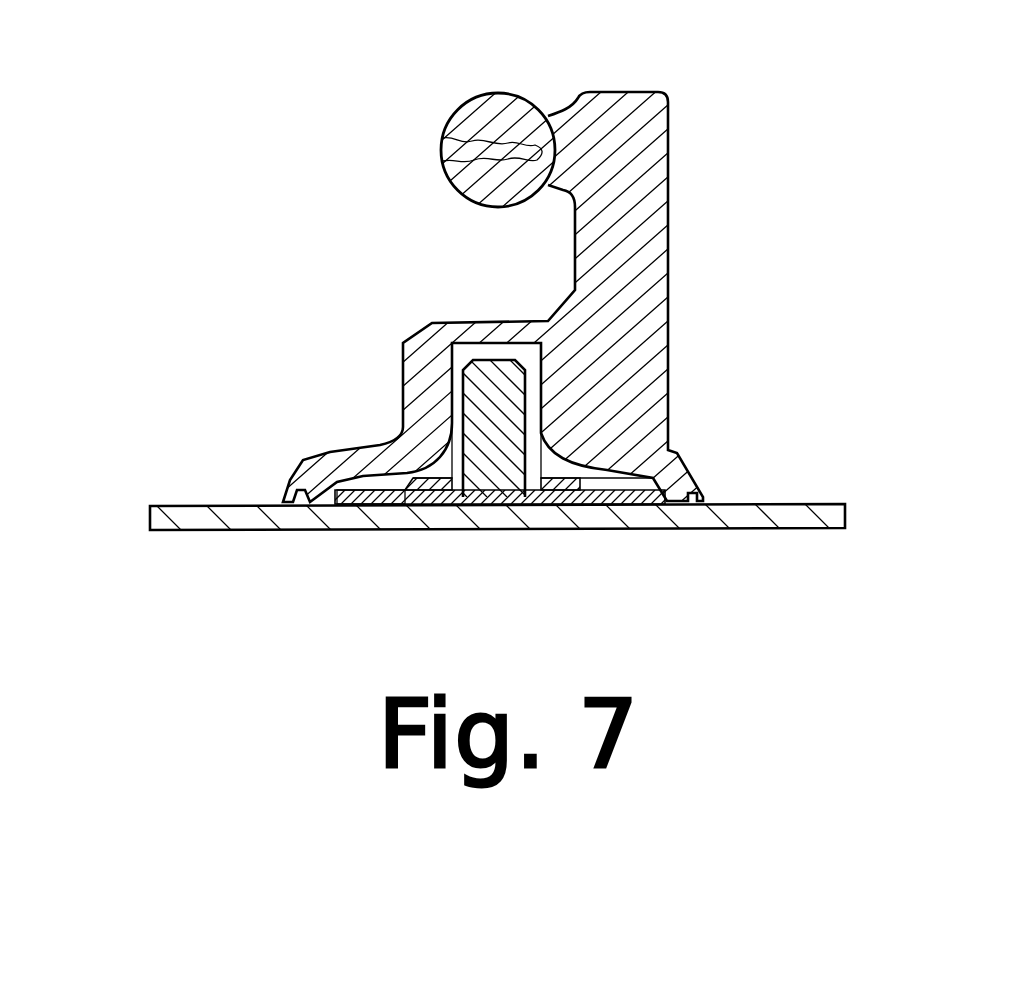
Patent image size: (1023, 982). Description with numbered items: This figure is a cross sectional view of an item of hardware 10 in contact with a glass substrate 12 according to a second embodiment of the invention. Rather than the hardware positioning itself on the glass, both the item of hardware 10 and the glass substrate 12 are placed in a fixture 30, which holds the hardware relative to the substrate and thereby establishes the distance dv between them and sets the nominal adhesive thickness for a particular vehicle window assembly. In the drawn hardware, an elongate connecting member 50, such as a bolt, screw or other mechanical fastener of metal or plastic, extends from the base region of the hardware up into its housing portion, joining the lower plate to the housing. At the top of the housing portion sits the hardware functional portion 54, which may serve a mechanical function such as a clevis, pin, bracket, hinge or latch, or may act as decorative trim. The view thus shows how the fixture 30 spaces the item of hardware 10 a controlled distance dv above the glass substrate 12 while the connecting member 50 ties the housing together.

The item of hardware 10 is at (830, 112).
The glass substrate 12 is at (578, 527).
The fixture 30 is at (845, 514).
The elongate connecting member 50 is at (465, 405).
The hardware functional portion 54 is at (443, 147).
The distance dv is at (413, 498).